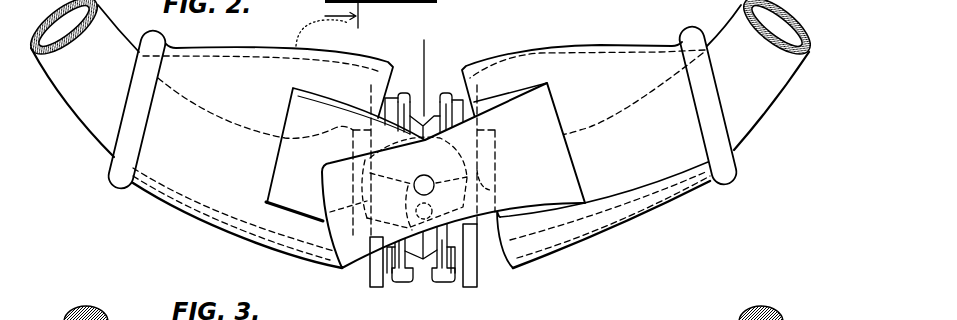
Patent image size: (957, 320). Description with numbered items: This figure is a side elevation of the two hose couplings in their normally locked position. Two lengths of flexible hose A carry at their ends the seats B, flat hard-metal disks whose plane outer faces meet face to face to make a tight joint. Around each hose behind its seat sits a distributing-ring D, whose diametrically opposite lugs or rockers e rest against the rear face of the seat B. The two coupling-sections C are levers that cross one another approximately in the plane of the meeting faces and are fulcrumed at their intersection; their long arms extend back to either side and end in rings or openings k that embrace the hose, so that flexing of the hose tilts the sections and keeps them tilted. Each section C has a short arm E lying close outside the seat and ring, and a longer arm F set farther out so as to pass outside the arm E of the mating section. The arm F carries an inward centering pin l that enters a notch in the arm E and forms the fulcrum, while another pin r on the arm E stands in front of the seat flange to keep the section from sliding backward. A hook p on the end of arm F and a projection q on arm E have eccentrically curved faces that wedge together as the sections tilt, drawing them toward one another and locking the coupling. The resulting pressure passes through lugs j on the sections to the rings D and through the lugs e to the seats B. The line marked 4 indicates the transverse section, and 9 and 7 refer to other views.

The flexible hose section A is at (420, 78).
The ring or opening of the coupling-section long arm k is at (423, 108).
The coupling-section C is at (421, 155).
The short arm E is at (345, 154).
The longer arm F is at (453, 175).
The lug or rocker of the distributing-ring e is at (387, 112).
The bolt head 9 is at (452, 93).
The seat B is at (412, 115).
The centre line 4 is at (416, 74).
The distributing-ring D is at (424, 192).
The hook projection p is at (348, 189).
The projection on arm E q is at (417, 183).
The centering or guiding pin l is at (424, 185).
The pin on arm E r is at (424, 211).
The lug of the coupling-section j is at (480, 186).
The section line 7 is at (381, 14).